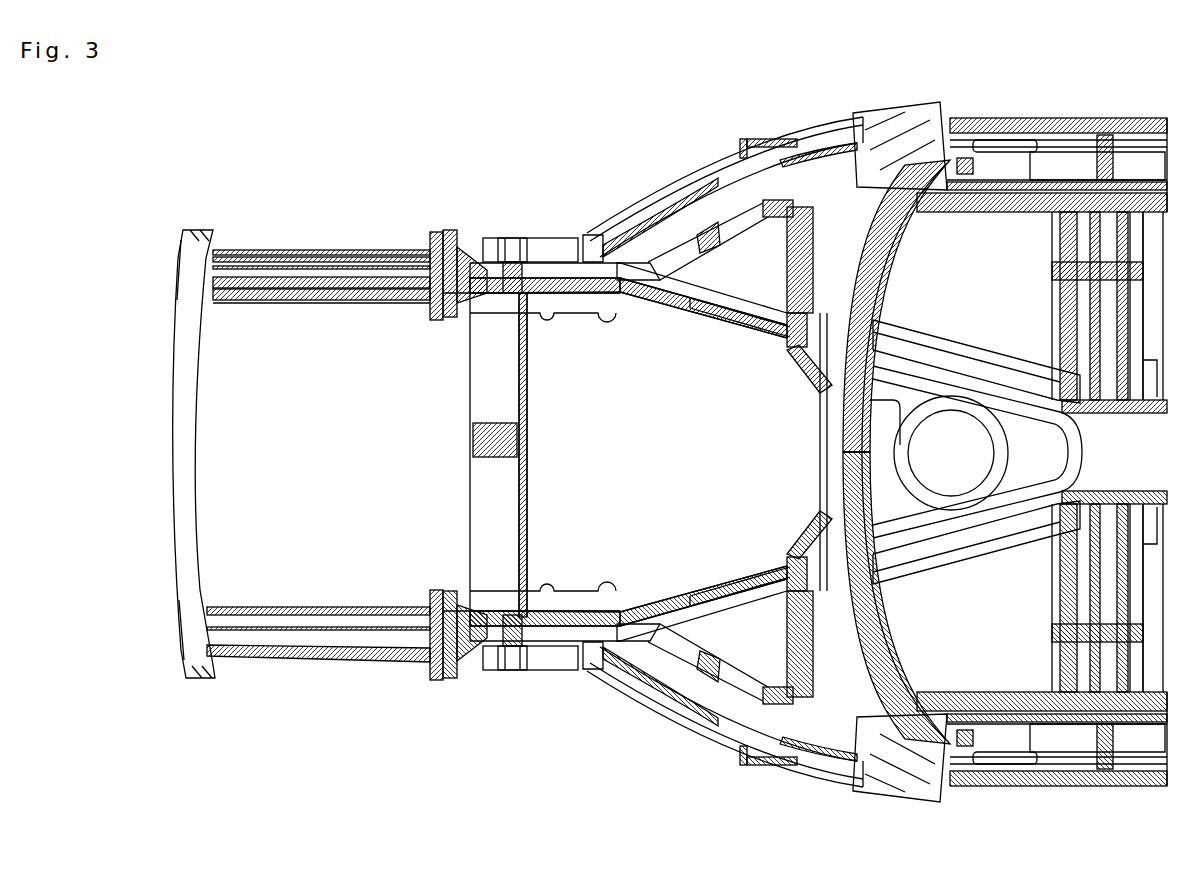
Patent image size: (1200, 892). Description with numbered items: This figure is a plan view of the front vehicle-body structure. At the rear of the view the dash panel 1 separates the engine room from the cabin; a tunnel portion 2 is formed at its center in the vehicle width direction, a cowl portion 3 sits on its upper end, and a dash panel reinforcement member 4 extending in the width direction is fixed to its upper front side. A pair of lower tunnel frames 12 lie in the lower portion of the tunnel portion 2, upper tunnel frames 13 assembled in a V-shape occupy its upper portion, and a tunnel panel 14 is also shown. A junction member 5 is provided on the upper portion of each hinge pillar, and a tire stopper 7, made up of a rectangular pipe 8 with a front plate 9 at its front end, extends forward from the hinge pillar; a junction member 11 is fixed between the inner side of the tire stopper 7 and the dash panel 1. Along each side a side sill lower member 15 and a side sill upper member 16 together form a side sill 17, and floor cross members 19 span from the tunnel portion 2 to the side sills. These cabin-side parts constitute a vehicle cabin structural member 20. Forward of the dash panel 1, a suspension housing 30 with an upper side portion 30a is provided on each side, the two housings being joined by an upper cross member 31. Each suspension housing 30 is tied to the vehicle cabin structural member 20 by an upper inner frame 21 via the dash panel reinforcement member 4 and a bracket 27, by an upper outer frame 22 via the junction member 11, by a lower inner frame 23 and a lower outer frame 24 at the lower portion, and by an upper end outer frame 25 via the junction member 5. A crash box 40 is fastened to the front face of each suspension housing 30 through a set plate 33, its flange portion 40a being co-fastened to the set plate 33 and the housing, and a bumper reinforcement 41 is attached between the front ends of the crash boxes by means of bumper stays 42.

The dash panel 1 is at (786, 262).
The tunnel portion 2 is at (805, 385).
The cowl portion 3 is at (895, 272).
The dash panel reinforcement member 4 is at (820, 468).
The junction member 5 is at (878, 118).
The tire stopper 7 is at (778, 137).
The rectangular pipe 8 is at (760, 139).
The front plate 9 is at (740, 143).
The junction member 11 is at (775, 218).
The lower tunnel frame 12 is at (986, 343).
The upper tunnel frame 13 is at (922, 372).
The tunnel panel 14 is at (878, 448).
The side sill lower member 15 is at (1015, 212).
The side sill upper member 16 is at (1060, 165).
The side sill 17 is at (1103, 126).
The floor cross member 19 is at (1144, 300).
The vehicle cabin structural member 20 is at (779, 292).
The upper inner frame 21 is at (757, 325).
The upper outer frame 22 is at (700, 230).
The lower inner frame 23 is at (672, 312).
The lower outer frame 24 is at (677, 258).
The upper end outer frame 25 is at (623, 223).
The bracket 27 is at (790, 370).
The suspension housing 30 is at (518, 238).
The upper side portion 30a is at (552, 240).
The upper cross member 31 is at (512, 400).
The set plate 33 is at (458, 240).
The crash box 40 is at (292, 250).
The flange portion 40a is at (433, 240).
The bumper reinforcement 41 is at (190, 396).
The bumper stay 42 is at (177, 262).